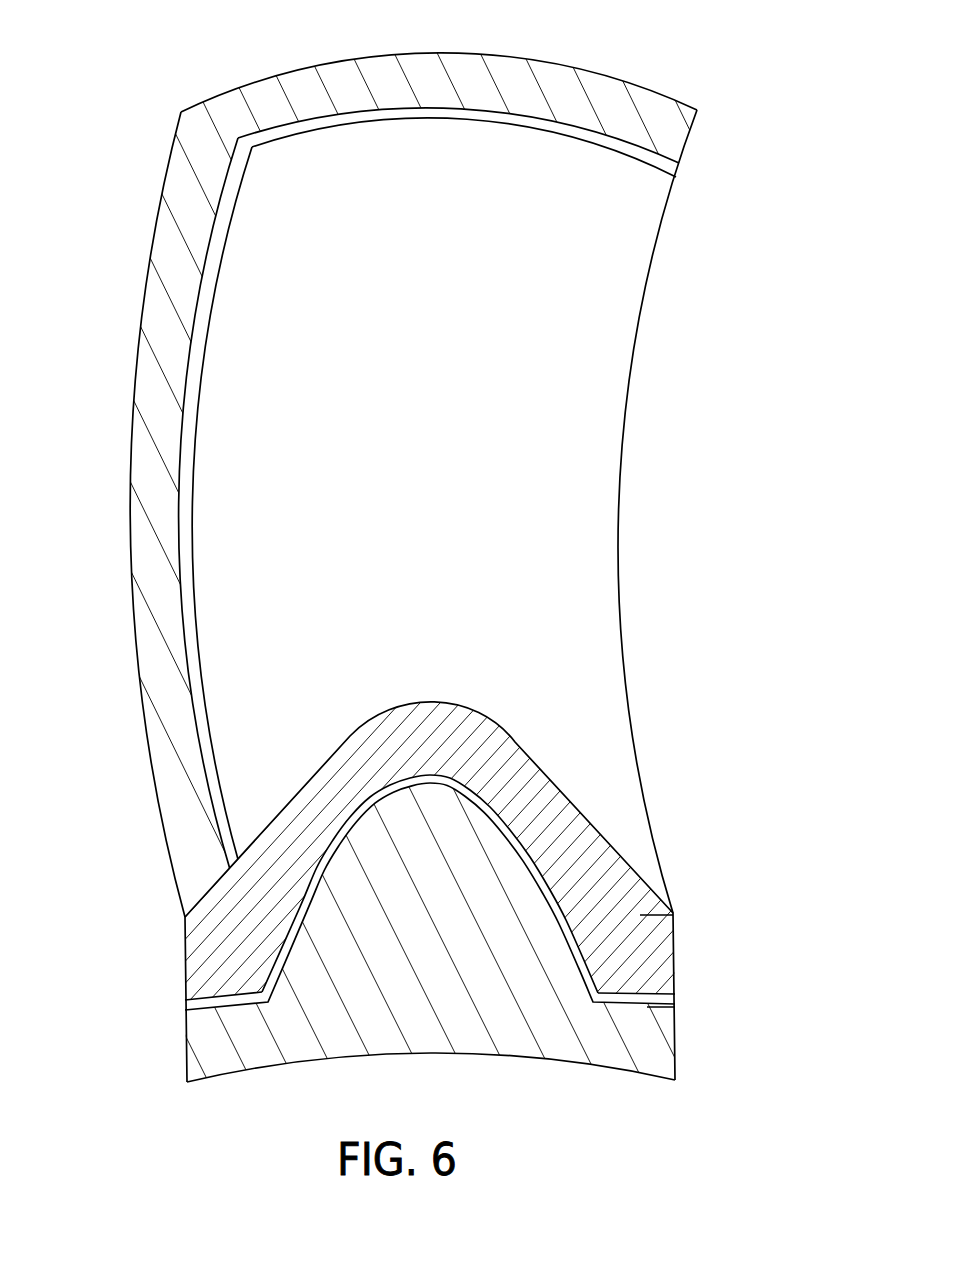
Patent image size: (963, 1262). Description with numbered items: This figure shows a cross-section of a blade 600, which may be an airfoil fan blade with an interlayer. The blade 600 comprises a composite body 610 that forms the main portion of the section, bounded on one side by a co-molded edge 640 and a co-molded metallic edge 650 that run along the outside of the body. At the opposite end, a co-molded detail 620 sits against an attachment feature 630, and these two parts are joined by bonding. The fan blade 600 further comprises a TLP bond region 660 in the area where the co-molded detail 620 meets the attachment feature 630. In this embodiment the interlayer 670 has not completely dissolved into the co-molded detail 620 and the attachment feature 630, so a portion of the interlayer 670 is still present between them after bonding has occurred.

The blade 600 is at (178, 50).
The composite body 610 is at (602, 307).
The co-molded detail 620 is at (673, 912).
The attachment feature 630 is at (647, 1046).
The co-molded edge 640 is at (198, 288).
The co-molded metallic edge 650 is at (185, 207).
The TLP bond region 660 is at (556, 864).
The interlayer 670 is at (677, 1000).